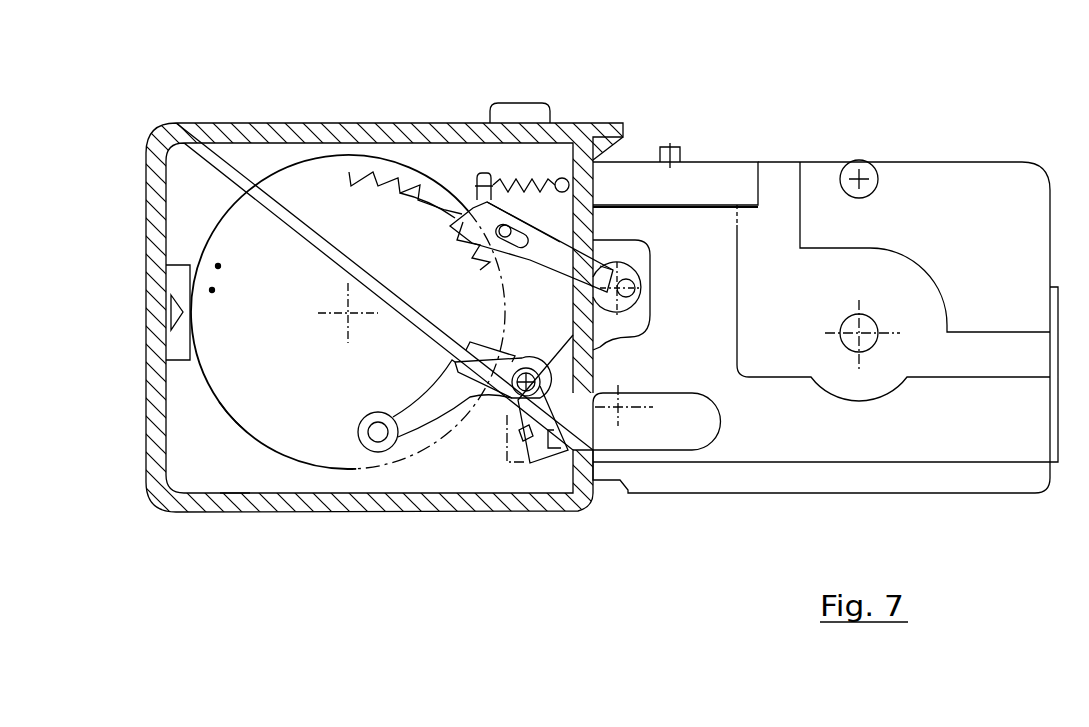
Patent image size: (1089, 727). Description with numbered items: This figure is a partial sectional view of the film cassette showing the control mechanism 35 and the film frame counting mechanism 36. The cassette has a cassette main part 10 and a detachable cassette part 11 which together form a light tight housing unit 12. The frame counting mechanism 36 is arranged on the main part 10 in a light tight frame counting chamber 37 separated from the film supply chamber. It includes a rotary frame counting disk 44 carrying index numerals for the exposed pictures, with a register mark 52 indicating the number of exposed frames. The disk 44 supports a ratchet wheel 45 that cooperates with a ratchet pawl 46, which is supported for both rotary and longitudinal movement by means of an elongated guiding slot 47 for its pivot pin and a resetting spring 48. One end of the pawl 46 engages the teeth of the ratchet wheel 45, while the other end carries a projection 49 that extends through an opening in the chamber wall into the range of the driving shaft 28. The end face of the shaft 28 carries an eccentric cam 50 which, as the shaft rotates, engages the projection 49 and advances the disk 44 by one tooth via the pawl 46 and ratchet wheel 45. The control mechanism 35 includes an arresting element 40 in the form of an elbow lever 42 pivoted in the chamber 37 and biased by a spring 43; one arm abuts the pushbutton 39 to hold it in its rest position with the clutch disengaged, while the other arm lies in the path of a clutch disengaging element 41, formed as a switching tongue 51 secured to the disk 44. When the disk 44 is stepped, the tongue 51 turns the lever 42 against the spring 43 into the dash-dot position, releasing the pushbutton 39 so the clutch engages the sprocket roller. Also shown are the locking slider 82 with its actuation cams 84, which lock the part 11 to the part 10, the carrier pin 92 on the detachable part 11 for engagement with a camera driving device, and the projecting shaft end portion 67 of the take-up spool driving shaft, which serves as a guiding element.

The light tight housing unit 12 is at (152, 128).
The cassette main part 10 is at (212, 135).
The frame counting disk 44 is at (287, 185).
The ratchet wheel 45 is at (355, 173).
The guiding slot 47 is at (517, 230).
The resetting spring 48 is at (560, 247).
The ratchet pawl 46 is at (548, 212).
The projection 49 is at (592, 257).
The actuation cams 84 is at (671, 140).
The locking slider 82 is at (723, 178).
The carrier pin 92 is at (857, 165).
The detachable cassette part 11 is at (948, 160).
The driving shaft 28 is at (633, 270).
The eccentric cam 50 is at (636, 291).
The shaft end portion 67 is at (870, 333).
The spring 43 is at (570, 342).
The switching tongue 51 is at (432, 410).
The register mark 52 is at (168, 312).
The film frame counting mechanism 36 is at (238, 432).
The frame counting chamber 37 is at (233, 475).
The clutch disengaging element 41 is at (366, 452).
The control mechanism 35 is at (493, 404).
The elbow lever 42 is at (548, 434).
The arresting element 40 is at (559, 466).
The pushbutton 39 is at (645, 432).